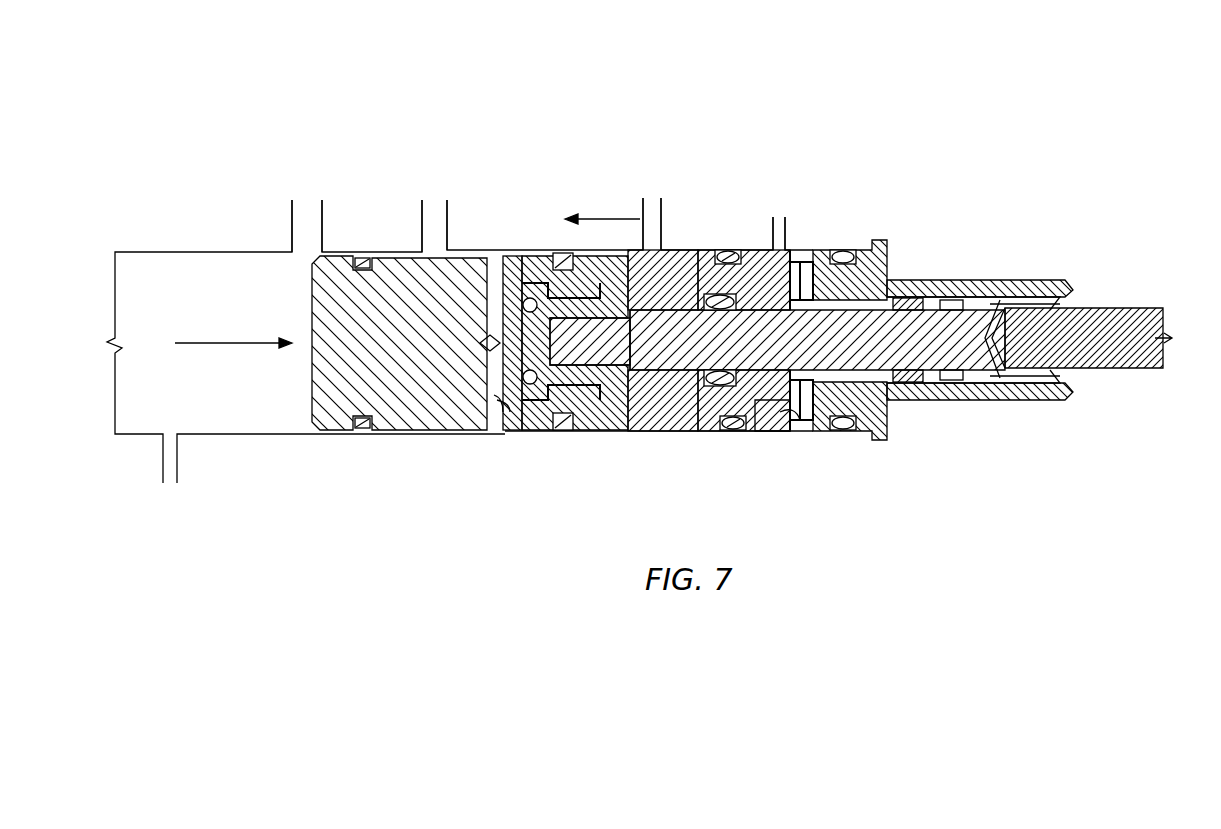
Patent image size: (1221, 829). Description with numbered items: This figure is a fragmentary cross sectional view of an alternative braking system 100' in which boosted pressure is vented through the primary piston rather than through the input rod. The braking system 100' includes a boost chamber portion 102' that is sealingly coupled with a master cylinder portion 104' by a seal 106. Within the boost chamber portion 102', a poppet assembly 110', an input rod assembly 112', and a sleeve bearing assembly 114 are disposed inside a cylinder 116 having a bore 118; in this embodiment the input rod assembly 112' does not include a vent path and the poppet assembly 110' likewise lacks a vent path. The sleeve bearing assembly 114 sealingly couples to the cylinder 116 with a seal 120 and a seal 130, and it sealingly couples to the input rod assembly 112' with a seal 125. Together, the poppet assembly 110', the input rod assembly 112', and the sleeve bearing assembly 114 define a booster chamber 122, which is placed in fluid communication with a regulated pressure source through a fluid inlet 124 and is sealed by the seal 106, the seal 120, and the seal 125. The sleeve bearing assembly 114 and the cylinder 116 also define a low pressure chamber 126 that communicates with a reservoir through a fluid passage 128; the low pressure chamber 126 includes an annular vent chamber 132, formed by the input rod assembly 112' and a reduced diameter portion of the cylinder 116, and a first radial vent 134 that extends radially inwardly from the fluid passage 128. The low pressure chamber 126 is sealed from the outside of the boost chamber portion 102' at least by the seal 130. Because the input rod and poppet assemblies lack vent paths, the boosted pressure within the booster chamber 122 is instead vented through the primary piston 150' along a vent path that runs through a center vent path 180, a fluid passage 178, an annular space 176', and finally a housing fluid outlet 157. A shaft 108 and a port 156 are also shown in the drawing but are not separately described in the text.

The braking system 100' is at (168, 56).
The boost chamber portion 102' is at (812, 285).
The master cylinder portion 104' is at (459, 311).
The seal 106 is at (530, 392).
The output shaft 108 is at (1148, 309).
The poppet assembly 110' is at (597, 398).
The input rod assembly 112' is at (817, 404).
The sleeve bearing assembly 114 is at (690, 394).
The cylinder 116 is at (673, 249).
The bore 118 is at (770, 432).
The seal 120 is at (733, 249).
The booster chamber 122 is at (647, 290).
The fluid inlet 124 is at (660, 212).
The seal 125 is at (788, 250).
The low pressure chamber 126 is at (798, 422).
The fluid passage 128 is at (786, 248).
The seal 130 is at (855, 246).
The annular vent chamber 132 is at (892, 295).
The first radial vent 134 is at (845, 243).
The primary piston 150' is at (399, 365).
The port 156 is at (323, 232).
The housing fluid outlet 157 is at (448, 212).
The annular space 176' is at (443, 196).
The fluid passage 178 is at (500, 410).
The center vent path 180 is at (492, 333).